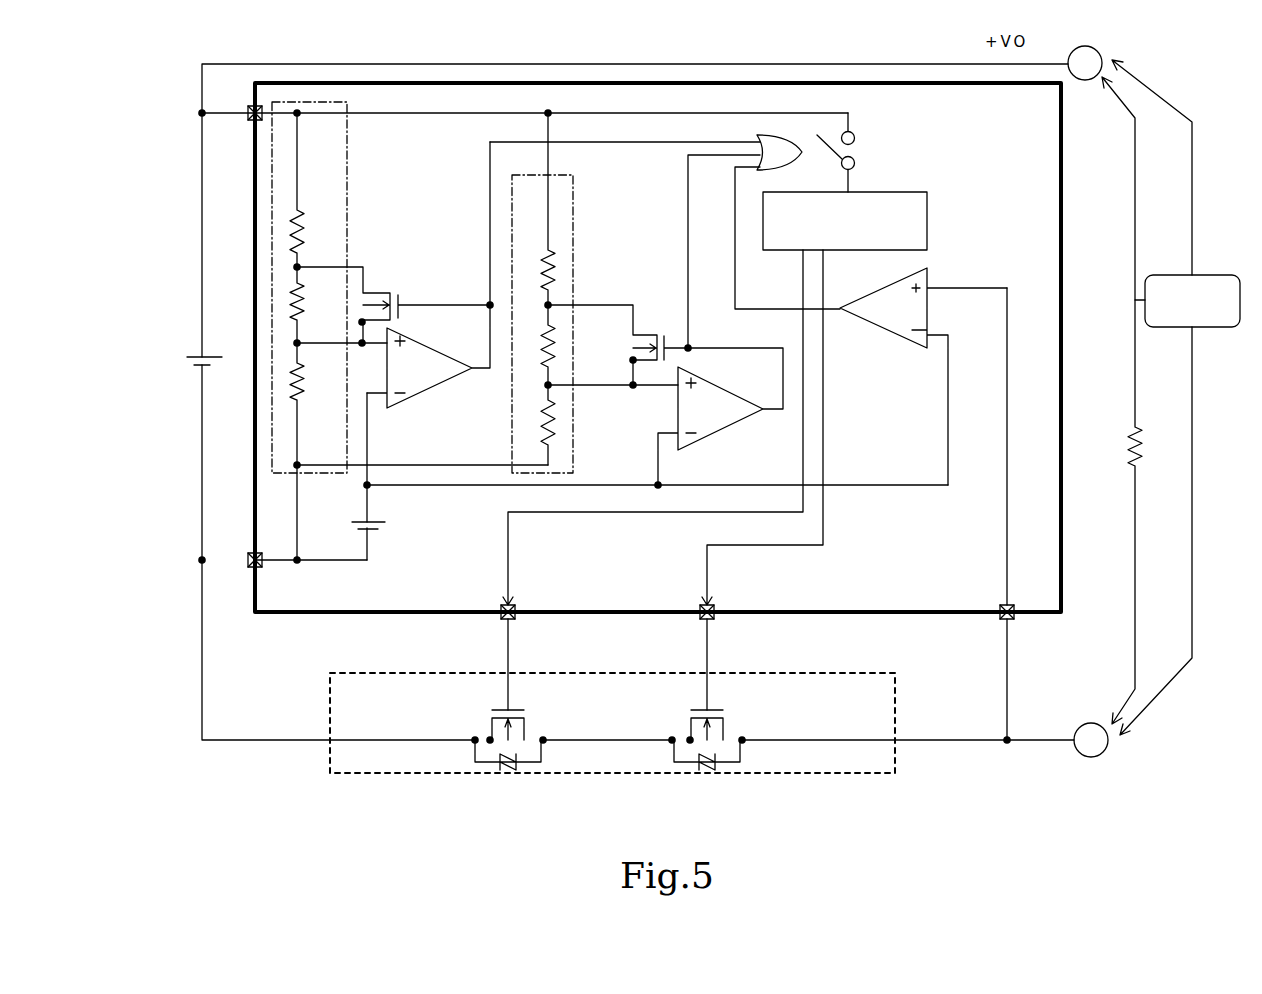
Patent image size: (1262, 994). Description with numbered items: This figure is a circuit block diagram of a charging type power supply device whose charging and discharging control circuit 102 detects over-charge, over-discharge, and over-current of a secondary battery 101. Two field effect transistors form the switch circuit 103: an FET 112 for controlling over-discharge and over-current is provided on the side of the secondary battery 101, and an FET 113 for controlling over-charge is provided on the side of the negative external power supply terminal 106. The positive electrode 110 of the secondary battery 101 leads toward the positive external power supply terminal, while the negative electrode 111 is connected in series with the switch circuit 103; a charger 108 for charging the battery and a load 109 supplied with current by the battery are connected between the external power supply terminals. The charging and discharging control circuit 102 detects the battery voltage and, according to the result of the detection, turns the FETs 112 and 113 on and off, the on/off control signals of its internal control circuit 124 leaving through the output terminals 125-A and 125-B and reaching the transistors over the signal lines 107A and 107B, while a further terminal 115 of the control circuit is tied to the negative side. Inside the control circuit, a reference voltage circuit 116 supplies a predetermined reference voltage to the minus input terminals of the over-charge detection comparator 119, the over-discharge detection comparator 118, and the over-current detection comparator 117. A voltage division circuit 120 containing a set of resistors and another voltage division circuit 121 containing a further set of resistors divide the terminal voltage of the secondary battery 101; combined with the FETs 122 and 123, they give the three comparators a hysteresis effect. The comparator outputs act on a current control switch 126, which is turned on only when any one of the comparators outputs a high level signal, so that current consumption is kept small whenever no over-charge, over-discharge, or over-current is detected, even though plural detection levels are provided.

The secondary battery 101 is at (175, 358).
The charging and discharging control circuit 102 is at (248, 265).
The switch circuit 103 is at (327, 758).
The negative output terminal 106 is at (1021, 697).
The gate signal line of FET-A 107A is at (513, 648).
The gate signal line of FET-B 107B is at (713, 648).
The charger 108 is at (1135, 298).
The load 109 is at (1127, 421).
The positive electrode 110 is at (187, 140).
The negative electrode 111 is at (212, 652).
The FET 112 is at (477, 725).
The FET 113 is at (742, 727).
The negative input terminal of protection IC 115 is at (992, 604).
The reference voltage circuit 116 is at (377, 535).
The over-current detection comparator 117 is at (927, 258).
The over-discharge detection comparator 118 is at (727, 427).
The over-charge detection comparator 119 is at (437, 392).
The voltage division circuit 120 is at (342, 103).
The voltage division circuit 121 is at (513, 228).
The FET 122 is at (378, 287).
The FET 123 is at (641, 323).
The internal control circuit 124 is at (934, 205).
The output terminal for FET-A 125-A is at (517, 601).
The output terminal for FET-B 125-B is at (717, 601).
The current control switch 126 is at (867, 155).